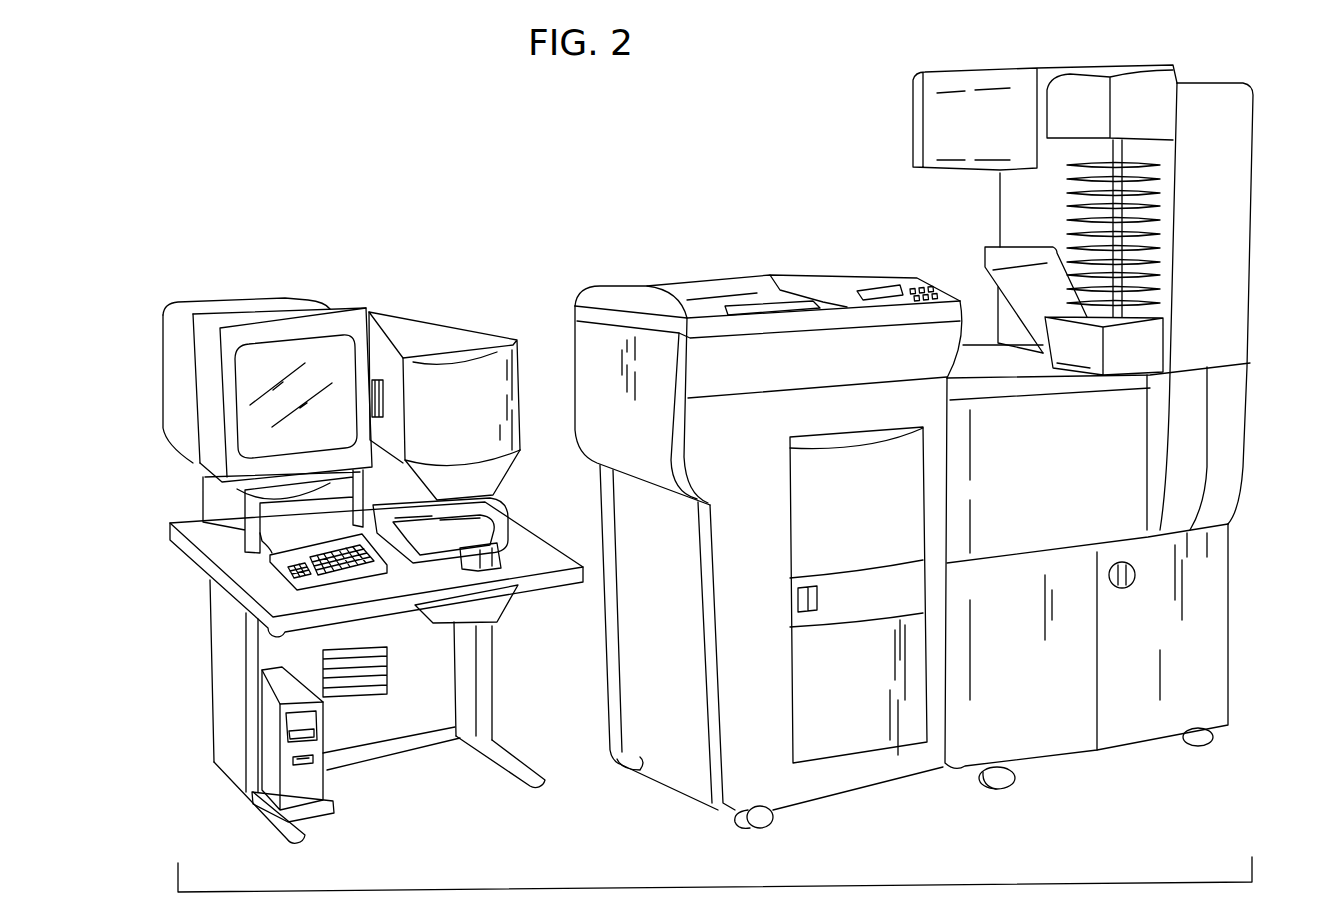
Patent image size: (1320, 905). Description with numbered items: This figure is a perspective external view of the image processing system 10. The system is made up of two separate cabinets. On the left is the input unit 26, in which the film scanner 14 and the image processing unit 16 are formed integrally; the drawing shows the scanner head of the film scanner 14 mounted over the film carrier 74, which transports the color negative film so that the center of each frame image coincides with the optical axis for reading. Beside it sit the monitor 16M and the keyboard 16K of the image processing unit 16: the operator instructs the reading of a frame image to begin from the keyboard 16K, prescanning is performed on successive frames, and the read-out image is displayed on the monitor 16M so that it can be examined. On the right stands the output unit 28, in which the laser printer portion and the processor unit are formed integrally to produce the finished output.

The image processing system 10 is at (456, 151).
The input unit 26 is at (235, 268).
The monitor 16M is at (208, 353).
The film scanner 14 is at (491, 306).
The film carrier 74 is at (491, 512).
The keyboard 16K is at (270, 562).
The image processing unit 16 is at (347, 783).
The output unit 28 is at (708, 202).